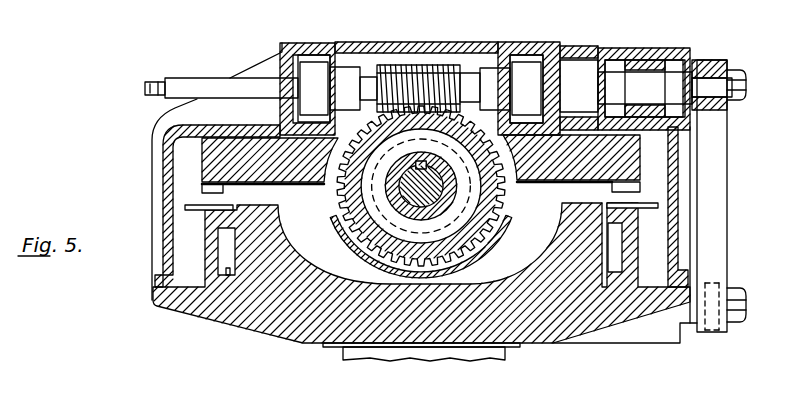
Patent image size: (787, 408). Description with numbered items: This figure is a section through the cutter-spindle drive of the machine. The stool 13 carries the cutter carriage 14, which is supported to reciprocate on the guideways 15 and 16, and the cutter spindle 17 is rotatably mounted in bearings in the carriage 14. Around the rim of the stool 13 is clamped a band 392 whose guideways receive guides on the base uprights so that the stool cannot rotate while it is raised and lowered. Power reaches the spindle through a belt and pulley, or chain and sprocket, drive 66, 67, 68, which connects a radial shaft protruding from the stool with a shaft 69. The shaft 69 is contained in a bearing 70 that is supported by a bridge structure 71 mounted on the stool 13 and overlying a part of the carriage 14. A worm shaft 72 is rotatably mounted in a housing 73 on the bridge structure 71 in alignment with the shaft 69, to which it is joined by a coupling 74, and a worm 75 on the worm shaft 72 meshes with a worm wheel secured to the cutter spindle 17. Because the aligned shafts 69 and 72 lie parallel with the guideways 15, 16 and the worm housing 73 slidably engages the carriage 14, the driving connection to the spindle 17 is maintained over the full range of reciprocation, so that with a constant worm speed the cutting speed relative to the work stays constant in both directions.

The stool 13 is at (283, 318).
The cutter carriage 14 is at (223, 150).
The guideway 15 is at (238, 195).
The guideway 16 is at (338, 197).
The cutter spindle 17 is at (405, 204).
The belt and pulley or chain and sprocket drive 66 is at (716, 333).
The belt and pulley or chain and sprocket drive 67 is at (720, 188).
The belt and pulley or chain and sprocket drive 68 is at (710, 67).
The shaft 69 is at (642, 80).
The bearing 70 is at (610, 60).
The bridge structure 71 is at (670, 152).
The worm shaft 72 is at (486, 73).
The housing 73 is at (334, 57).
The coupling 74 is at (575, 67).
The worm 75 is at (423, 69).
The band 392 is at (214, 258).